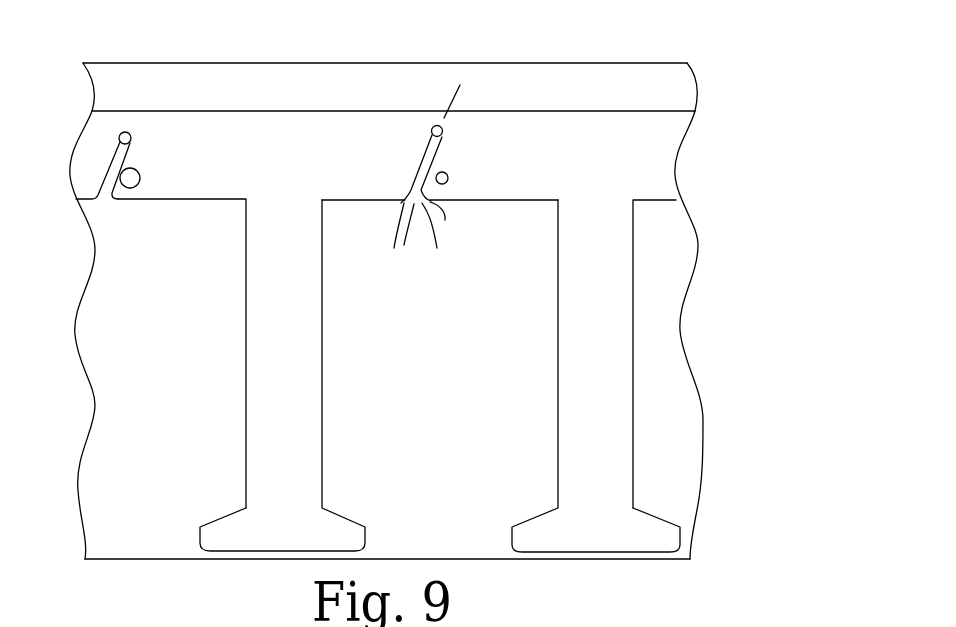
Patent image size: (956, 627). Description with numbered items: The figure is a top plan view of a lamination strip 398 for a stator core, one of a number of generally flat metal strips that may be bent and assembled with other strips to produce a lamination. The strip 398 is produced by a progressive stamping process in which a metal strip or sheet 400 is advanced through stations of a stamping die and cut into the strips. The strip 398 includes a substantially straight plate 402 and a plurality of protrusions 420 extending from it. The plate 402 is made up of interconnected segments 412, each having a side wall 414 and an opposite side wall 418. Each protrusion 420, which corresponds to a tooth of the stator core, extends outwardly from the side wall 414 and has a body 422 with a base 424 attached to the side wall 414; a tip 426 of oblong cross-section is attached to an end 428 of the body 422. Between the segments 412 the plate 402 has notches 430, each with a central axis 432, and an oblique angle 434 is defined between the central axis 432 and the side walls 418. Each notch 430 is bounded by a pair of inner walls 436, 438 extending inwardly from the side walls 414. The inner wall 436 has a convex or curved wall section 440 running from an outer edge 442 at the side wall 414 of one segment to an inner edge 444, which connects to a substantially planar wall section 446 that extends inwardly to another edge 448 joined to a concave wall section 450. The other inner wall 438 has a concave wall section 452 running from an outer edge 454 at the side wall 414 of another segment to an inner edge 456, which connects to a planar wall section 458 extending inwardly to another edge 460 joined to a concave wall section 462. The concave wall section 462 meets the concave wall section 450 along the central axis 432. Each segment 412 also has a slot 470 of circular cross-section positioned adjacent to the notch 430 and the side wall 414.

The lamination strip 398 is at (722, 81).
The metal strip or sheet 400 is at (182, 63).
The plate 402 is at (252, 120).
The segment 412 is at (202, 190).
The side wall 414 is at (157, 202).
The side wall 418 is at (128, 111).
The protrusion 420 is at (305, 353).
The body 422 is at (303, 415).
The base 424 is at (303, 237).
The tip 426 is at (343, 528).
The end 428 is at (307, 504).
The notch 430 is at (411, 245).
The central axis 432 is at (445, 120).
The oblique angle 434 is at (450, 124).
The inner wall 436 is at (448, 150).
The inner wall 438 is at (428, 142).
The convex or curved wall section 440 is at (417, 222).
The outer edge 442 is at (440, 235).
The inner edge 444 is at (455, 218).
The planar wall section 446 is at (456, 178).
The edge 448 is at (448, 140).
The concave wall section 450 is at (448, 128).
The concave wall section 452 is at (406, 199).
The outer edge 454 is at (400, 228).
The inner edge 456 is at (416, 176).
The planar wall section 458 is at (426, 152).
The edge 460 is at (432, 126).
The concave wall section 462 is at (438, 126).
The slot 470 is at (462, 183).